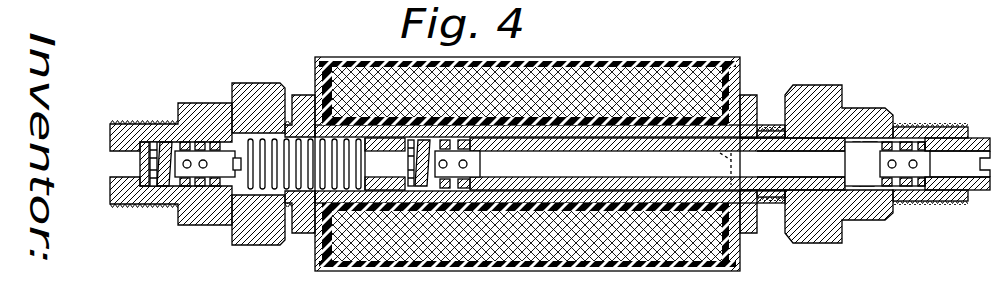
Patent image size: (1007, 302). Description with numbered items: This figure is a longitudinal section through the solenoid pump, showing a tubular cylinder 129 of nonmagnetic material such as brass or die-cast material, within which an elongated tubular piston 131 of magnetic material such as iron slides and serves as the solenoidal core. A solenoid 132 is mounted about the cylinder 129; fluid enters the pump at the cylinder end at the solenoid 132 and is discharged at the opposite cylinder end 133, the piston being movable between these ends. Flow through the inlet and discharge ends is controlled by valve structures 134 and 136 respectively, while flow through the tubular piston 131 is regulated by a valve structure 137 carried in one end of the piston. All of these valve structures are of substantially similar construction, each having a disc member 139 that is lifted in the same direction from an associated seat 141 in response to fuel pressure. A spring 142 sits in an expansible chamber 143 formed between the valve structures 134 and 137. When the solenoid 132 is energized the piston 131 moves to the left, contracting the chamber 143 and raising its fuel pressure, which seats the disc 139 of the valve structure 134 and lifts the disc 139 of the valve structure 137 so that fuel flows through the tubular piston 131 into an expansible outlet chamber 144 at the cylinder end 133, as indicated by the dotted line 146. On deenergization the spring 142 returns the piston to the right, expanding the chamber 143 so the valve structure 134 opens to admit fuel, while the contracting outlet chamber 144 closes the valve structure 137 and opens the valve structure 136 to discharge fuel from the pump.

The cylinder 129 is at (765, 152).
The tubular piston 131 is at (778, 190).
The solenoid 132 is at (306, 95).
The cylinder end 133 is at (820, 135).
The valve structure 134 is at (197, 142).
The valve structure 136 is at (903, 130).
The valve structure 137 is at (580, 144).
The disc member 139 is at (155, 140).
The seat 141 is at (143, 143).
The spring 142 is at (527, 236).
The expansible chamber 143 is at (259, 133).
The expansible outlet chamber 144 is at (786, 130).
The dotted line 146 is at (527, 92).